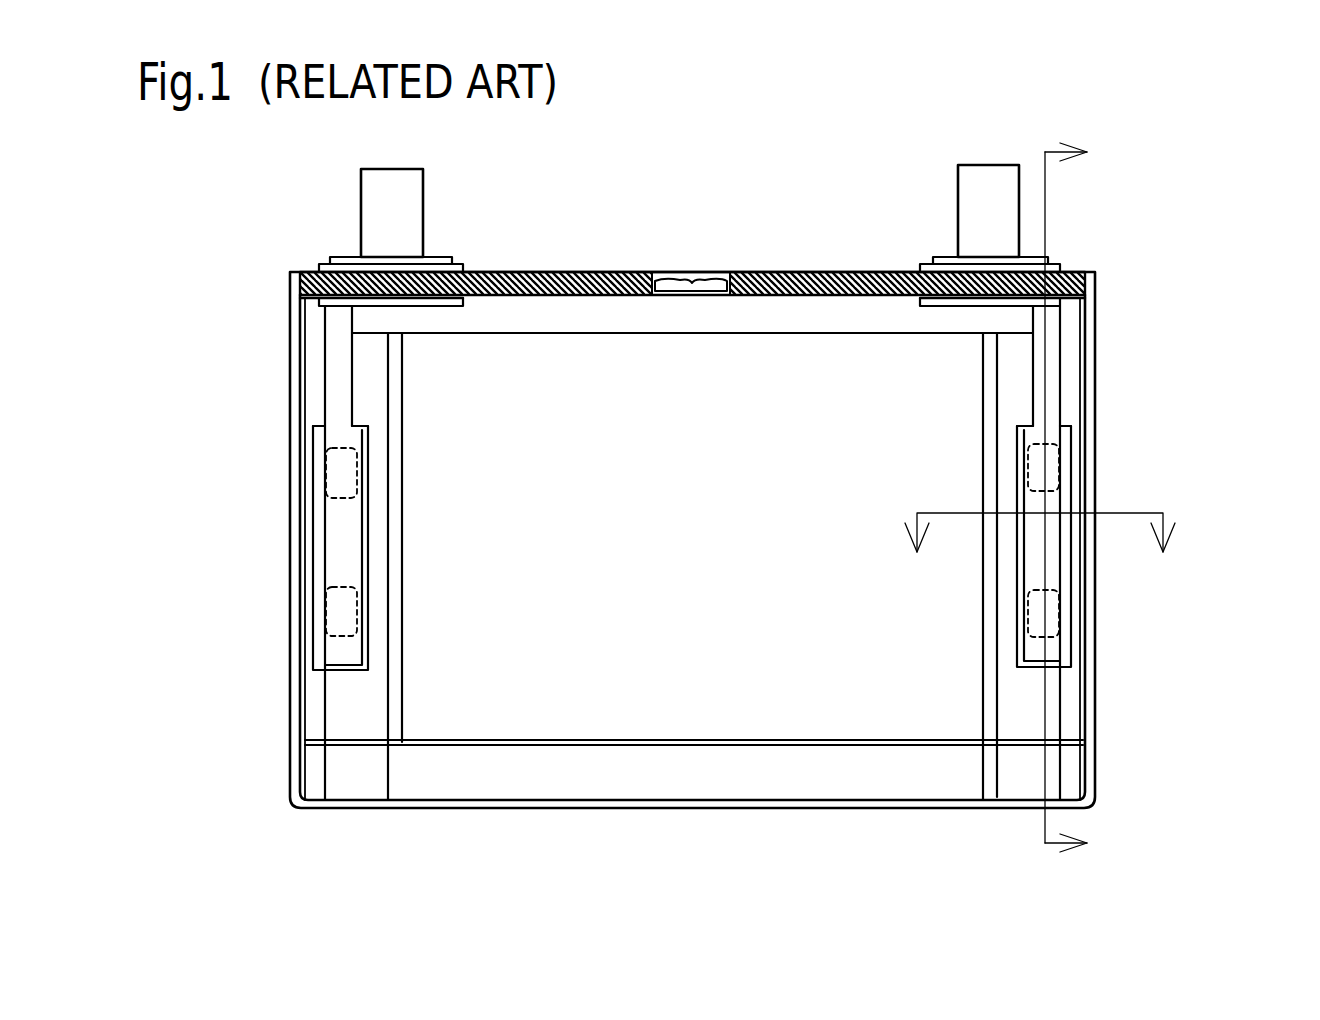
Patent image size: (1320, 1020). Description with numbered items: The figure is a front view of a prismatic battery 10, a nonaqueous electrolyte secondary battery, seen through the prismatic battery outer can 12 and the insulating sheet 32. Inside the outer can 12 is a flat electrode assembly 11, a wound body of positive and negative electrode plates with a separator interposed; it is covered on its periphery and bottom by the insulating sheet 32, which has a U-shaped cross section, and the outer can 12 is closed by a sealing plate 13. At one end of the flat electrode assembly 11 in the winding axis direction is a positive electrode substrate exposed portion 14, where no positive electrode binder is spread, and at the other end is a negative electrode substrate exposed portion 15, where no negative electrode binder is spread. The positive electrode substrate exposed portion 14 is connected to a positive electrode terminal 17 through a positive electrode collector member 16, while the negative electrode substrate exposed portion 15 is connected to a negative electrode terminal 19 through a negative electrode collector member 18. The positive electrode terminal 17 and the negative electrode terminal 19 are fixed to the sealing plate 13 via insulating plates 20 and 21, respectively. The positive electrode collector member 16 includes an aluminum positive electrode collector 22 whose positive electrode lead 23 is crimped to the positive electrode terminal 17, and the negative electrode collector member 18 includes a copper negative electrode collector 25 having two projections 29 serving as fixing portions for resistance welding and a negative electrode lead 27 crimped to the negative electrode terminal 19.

The prismatic battery 10 is at (250, 193).
The flat electrode assembly 11 is at (483, 723).
The prismatic battery outer can 12 is at (297, 755).
The sealing plate 13 is at (738, 272).
The positive electrode substrate exposed portion 14 is at (350, 697).
The negative electrode substrate exposed portion 15 is at (1050, 715).
The positive electrode collector member 16 is at (342, 520).
The positive electrode terminal 17 is at (410, 185).
The negative electrode collector member 18 is at (1050, 498).
The negative electrode terminal 19 is at (975, 177).
The insulating plate 20 is at (460, 268).
The insulating plate 21 is at (928, 262).
The positive electrode collector 22 is at (338, 445).
The positive electrode lead 23 is at (333, 363).
The negative electrode collector 25 is at (1032, 495).
The negative electrode lead 27 is at (1055, 340).
The projections 29 is at (1053, 458).
The insulating sheet 32 is at (395, 722).